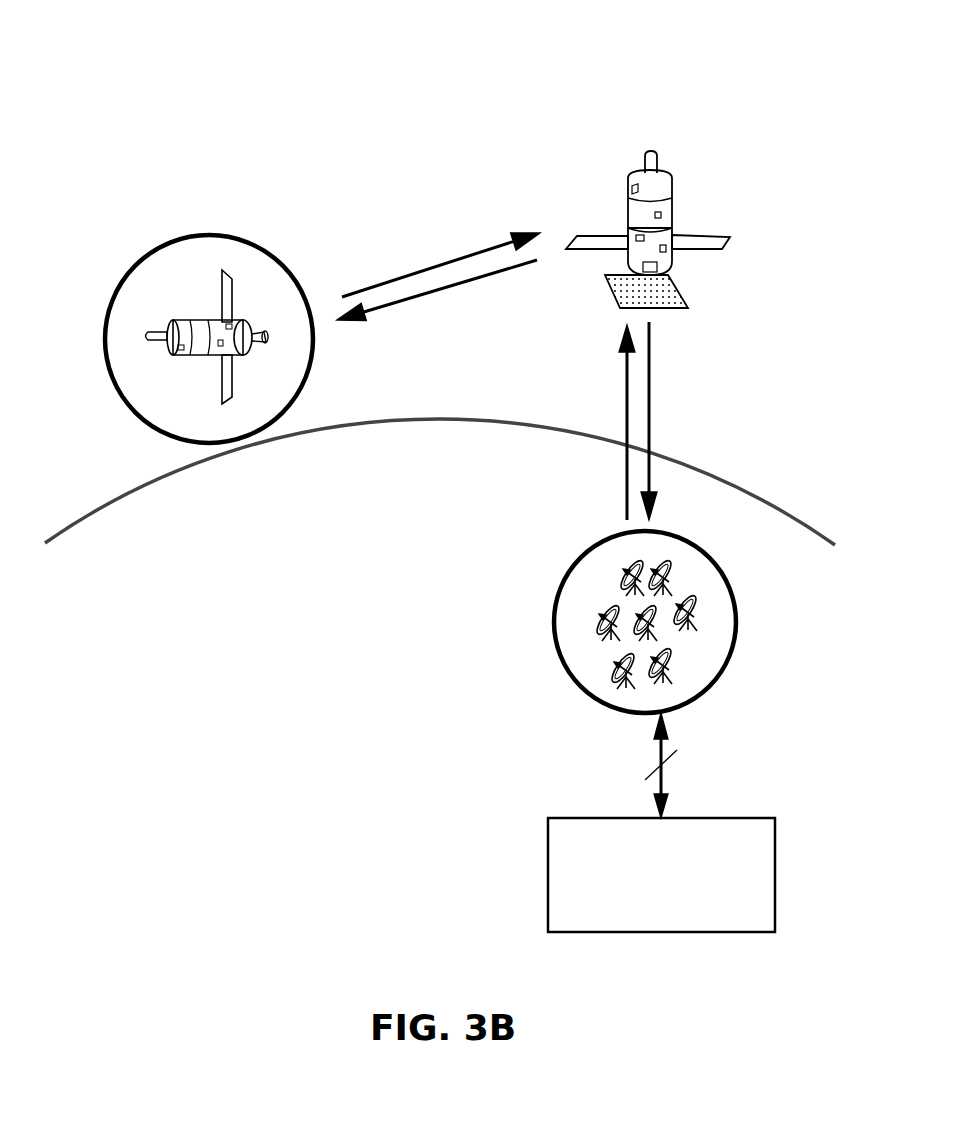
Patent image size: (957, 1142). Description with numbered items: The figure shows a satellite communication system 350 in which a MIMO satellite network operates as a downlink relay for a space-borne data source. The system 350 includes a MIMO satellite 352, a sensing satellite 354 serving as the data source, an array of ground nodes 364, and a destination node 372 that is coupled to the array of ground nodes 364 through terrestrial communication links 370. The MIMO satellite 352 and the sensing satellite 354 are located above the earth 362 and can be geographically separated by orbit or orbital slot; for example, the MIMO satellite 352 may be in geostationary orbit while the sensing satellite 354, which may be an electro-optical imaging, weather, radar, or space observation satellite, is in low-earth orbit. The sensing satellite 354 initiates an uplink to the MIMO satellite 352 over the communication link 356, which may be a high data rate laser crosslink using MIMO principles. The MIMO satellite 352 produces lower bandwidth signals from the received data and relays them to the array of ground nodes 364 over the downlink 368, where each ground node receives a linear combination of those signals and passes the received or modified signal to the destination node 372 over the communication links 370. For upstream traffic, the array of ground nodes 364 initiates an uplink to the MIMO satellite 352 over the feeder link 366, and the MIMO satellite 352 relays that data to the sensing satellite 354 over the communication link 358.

The satellite communication system 350 is at (453, 73).
The MIMO satellite 352 is at (677, 192).
The sensing satellite 354 is at (227, 215).
The communication link 356 is at (425, 263).
The communication link 358 is at (455, 292).
The earth 362 is at (765, 505).
The array of ground nodes 364 is at (738, 600).
The feeder link 366 is at (622, 415).
The downlink 368 is at (650, 417).
The communication links 370 is at (667, 778).
The destination node 372 is at (777, 867).